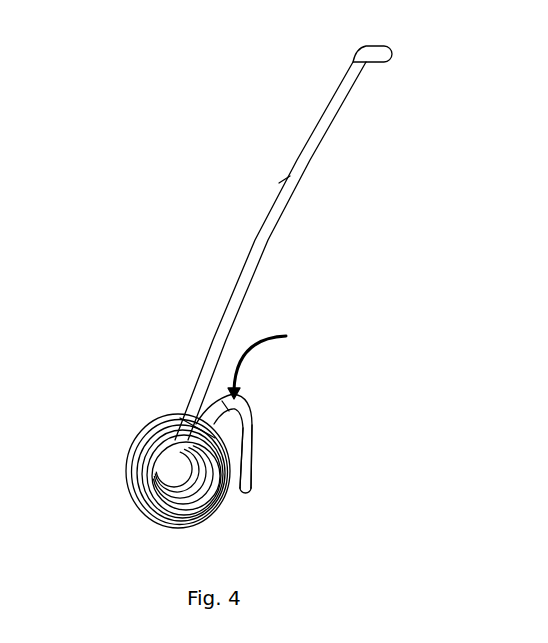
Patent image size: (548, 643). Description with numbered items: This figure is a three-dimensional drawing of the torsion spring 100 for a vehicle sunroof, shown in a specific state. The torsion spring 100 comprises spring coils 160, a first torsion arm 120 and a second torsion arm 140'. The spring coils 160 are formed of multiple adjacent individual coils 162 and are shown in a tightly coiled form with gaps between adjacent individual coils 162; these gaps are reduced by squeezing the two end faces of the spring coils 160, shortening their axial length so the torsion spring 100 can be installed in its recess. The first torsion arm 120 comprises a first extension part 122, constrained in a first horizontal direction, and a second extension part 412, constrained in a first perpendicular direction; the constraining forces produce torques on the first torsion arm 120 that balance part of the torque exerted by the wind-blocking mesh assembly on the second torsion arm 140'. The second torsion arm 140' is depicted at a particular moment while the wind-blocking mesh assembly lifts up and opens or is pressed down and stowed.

The torsion spring 100 is at (145, 111).
The second torsion arm 140' is at (283, 243).
The spring coils 160 is at (142, 462).
The individual coils 162 is at (127, 461).
The first torsion arm 120 is at (254, 442).
The first extension part 122 is at (252, 456).
The second extension part 412 is at (282, 362).